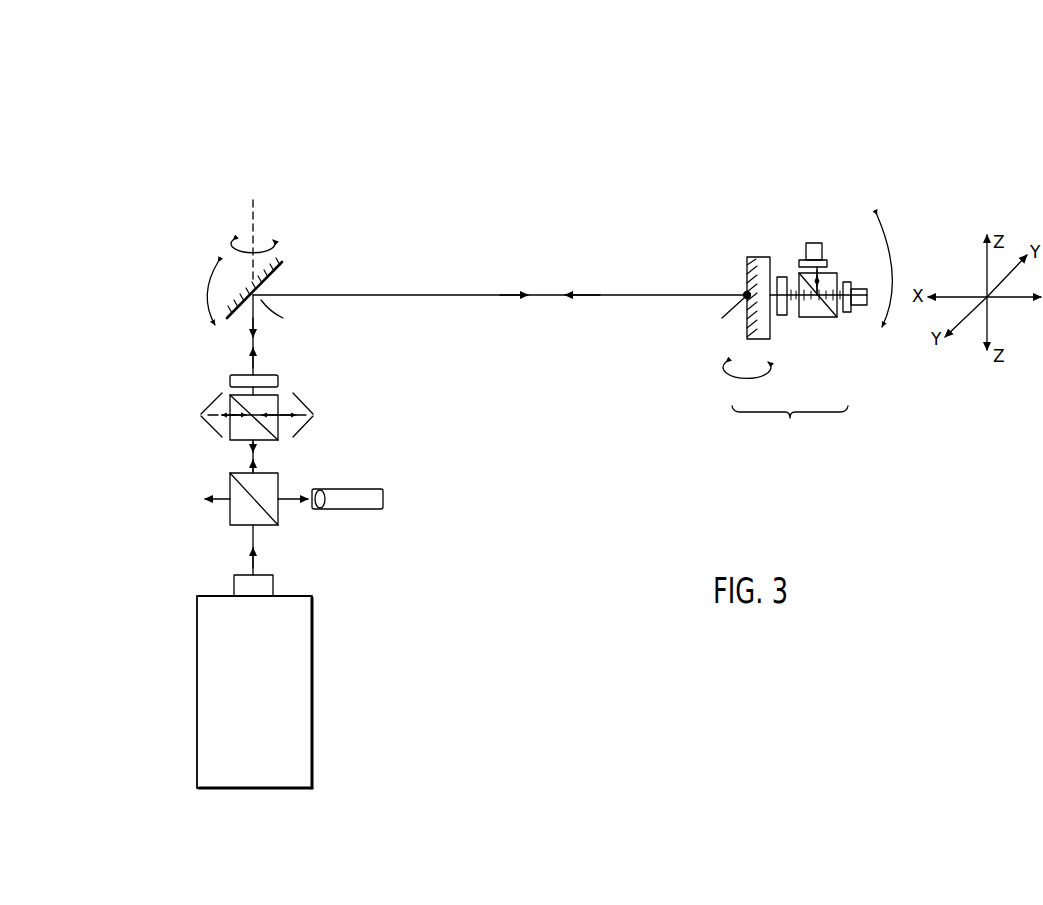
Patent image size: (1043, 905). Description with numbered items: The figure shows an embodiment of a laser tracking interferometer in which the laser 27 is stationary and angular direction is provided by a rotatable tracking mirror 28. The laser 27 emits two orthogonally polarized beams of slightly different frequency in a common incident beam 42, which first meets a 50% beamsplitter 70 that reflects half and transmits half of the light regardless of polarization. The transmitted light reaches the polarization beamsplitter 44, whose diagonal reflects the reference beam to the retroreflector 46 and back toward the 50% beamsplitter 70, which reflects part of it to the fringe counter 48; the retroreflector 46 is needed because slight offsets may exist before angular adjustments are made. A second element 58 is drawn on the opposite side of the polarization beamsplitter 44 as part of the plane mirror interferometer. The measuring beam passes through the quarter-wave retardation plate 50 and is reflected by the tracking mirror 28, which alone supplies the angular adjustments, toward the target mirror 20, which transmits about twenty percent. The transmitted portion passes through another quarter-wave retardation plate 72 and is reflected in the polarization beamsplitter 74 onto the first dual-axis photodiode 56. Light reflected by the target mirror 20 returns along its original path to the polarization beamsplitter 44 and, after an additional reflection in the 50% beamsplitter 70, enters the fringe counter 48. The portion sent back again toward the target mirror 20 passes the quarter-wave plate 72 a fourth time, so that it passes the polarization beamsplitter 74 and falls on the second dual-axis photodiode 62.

The target mirror 20 is at (745, 266).
The laser 27 is at (197, 666).
The tracking mirror 28 is at (282, 270).
The incident beam 42 is at (258, 548).
The polarization beamsplitter 44 is at (236, 441).
The retroreflector 46 is at (210, 425).
The fringe counter 48 is at (315, 511).
The quarter-wave retardation plate 50 is at (44, 370).
The first dual-axis photodiode 56 is at (805, 247).
The plane mirror 58 is at (304, 427).
The second dual-axis photodiode 62 is at (862, 307).
The 50% beamsplitter 70 is at (243, 527).
The quarter-wave retardation plate 72 is at (786, 316).
The polarization beamsplitter 74 is at (833, 268).